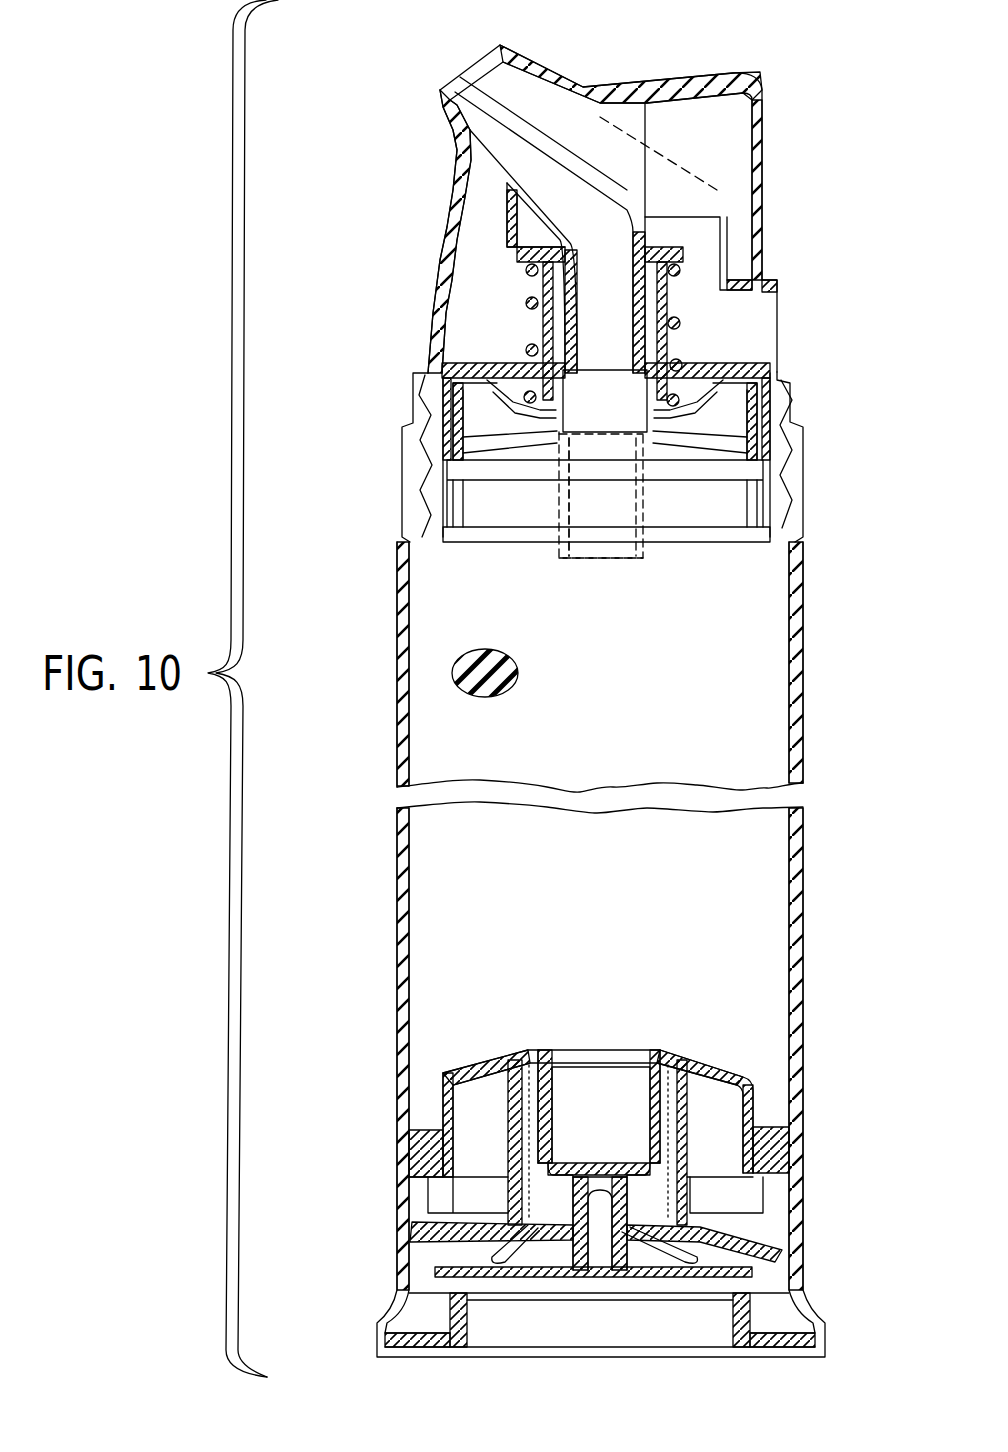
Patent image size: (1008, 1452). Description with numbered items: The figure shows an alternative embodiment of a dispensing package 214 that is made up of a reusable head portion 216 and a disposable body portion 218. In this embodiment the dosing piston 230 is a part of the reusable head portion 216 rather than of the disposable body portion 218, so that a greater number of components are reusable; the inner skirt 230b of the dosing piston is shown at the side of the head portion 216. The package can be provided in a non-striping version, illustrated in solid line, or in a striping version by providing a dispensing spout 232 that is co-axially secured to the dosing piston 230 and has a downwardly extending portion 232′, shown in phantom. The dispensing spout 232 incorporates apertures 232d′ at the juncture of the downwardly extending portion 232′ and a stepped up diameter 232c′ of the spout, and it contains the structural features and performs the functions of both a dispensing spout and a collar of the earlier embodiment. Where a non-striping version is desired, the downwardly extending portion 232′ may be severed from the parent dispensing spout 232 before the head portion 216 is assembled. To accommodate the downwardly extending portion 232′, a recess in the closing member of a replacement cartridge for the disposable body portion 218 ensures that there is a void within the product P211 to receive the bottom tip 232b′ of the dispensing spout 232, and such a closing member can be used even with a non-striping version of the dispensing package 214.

The head portion 216 is at (780, 335).
The dosing piston 230 is at (777, 413).
The inner skirt of pump body 230b is at (778, 330).
The dispensing spout 232 is at (570, 416).
The downwardly extending portion 232′ is at (728, 485).
The bottom tip 232b′ is at (729, 579).
The stepped up diameter 232c′ is at (572, 440).
The apertures 232d′ is at (555, 434).
The product P211 is at (453, 677).
The dispensing package 214 is at (822, 695).
The disposable body portion 218 is at (803, 847).